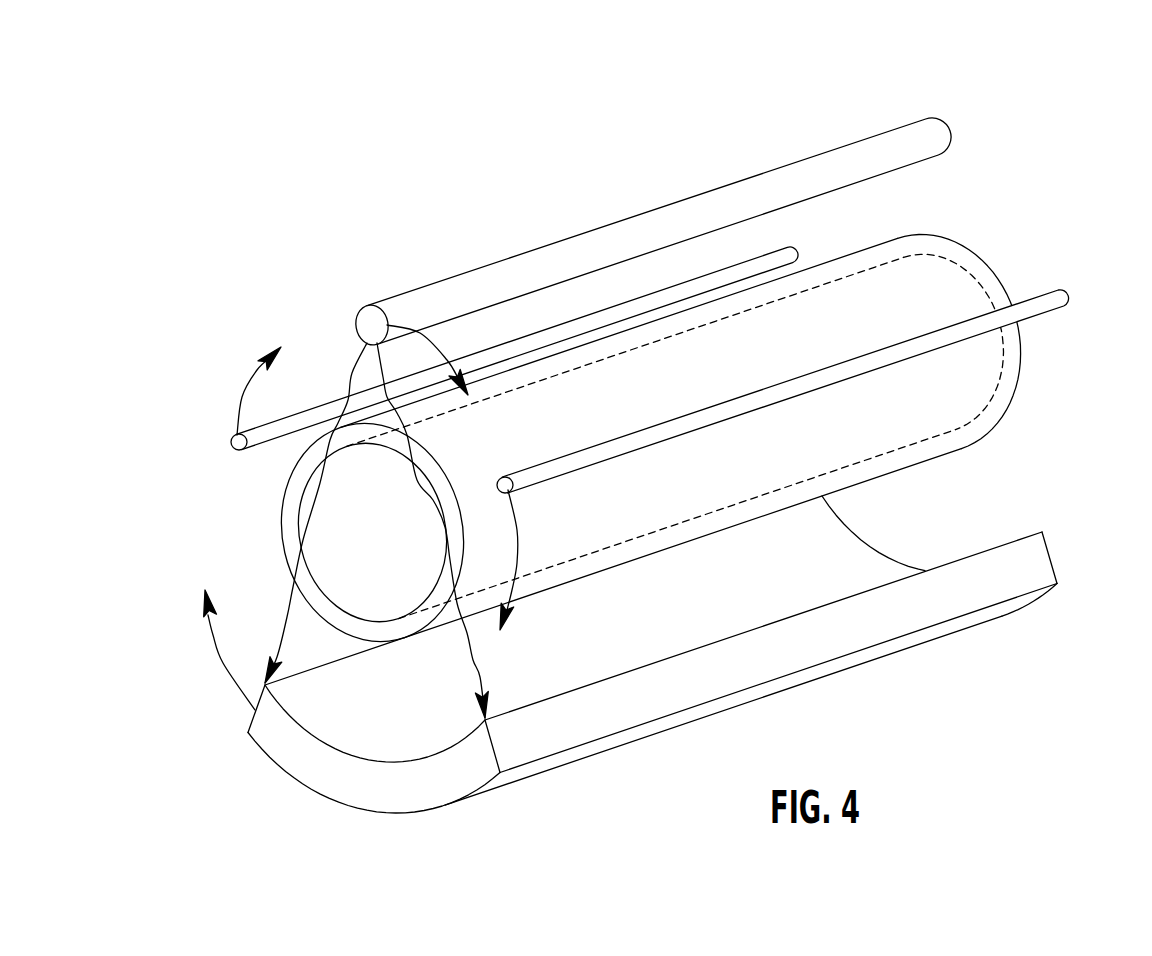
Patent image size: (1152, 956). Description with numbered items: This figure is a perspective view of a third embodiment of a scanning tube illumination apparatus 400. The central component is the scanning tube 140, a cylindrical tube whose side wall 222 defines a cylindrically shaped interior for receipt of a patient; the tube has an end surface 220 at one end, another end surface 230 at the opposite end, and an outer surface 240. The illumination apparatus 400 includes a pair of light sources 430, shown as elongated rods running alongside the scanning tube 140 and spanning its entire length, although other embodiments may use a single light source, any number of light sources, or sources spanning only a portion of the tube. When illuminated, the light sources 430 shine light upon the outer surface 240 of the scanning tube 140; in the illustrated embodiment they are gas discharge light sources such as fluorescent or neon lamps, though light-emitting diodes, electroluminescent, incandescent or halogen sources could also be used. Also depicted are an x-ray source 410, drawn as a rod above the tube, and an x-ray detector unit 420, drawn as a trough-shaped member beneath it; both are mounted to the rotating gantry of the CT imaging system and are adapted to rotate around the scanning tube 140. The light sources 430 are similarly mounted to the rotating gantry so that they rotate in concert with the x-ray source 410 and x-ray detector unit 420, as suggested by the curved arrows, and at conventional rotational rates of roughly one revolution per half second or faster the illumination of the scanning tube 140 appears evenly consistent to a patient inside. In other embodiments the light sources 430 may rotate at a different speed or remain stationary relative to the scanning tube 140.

The scanning tube illumination apparatus 400 is at (873, 97).
The x-ray source 410 is at (933, 130).
The light sources 430 is at (794, 257).
The scanning tube 140 is at (679, 433).
The outer surface 240 is at (991, 289).
The end surface 230 is at (1021, 372).
The side wall 222 is at (928, 448).
The end surface 220 is at (292, 507).
The x-ray detector unit 420 is at (1033, 572).